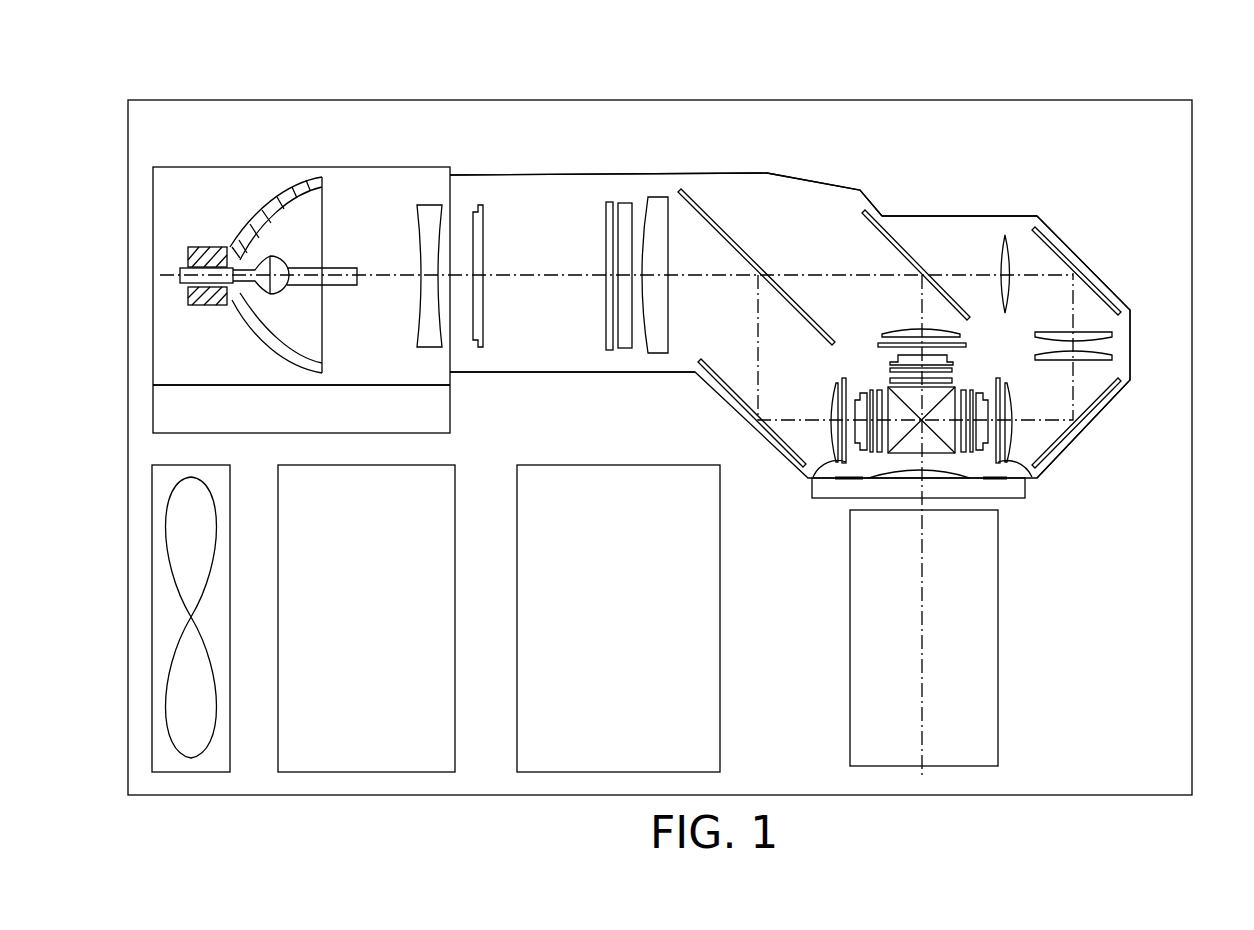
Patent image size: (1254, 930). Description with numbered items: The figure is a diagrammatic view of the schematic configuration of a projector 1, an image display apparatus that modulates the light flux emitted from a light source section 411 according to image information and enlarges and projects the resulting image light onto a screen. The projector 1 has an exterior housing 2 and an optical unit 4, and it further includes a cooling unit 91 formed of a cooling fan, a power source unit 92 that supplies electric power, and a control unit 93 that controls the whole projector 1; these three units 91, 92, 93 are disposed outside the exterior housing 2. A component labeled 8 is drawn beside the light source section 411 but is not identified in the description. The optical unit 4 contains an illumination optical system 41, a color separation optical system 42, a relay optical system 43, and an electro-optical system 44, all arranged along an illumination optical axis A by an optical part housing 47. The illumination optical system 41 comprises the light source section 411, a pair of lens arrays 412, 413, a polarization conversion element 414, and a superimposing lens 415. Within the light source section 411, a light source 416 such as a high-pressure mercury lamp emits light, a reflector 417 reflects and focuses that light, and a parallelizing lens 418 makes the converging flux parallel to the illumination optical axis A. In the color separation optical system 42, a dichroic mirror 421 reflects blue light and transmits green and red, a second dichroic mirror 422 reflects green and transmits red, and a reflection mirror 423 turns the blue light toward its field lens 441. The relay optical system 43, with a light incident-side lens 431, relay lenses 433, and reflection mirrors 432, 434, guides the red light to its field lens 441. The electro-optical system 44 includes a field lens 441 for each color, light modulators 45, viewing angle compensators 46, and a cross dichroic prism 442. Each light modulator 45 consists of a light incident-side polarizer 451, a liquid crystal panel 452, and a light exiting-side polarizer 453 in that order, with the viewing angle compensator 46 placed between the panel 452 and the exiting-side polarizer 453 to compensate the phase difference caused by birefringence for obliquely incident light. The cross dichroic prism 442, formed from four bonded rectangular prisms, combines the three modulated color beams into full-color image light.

The projector 1 is at (982, 66).
The exterior housing 2 is at (1192, 215).
The optical unit 4 is at (1107, 118).
The light source support 8 is at (447, 396).
The illumination optical system 41 is at (611, 158).
The light source section 411 is at (170, 117).
The lens array 412 is at (483, 226).
The lens array 413 is at (607, 202).
The polarization conversion element 414 is at (630, 203).
The superimposing lens 415 is at (660, 215).
The light source 416 is at (303, 265).
The reflector 417 is at (290, 198).
The parallelizing lens 418 is at (427, 204).
The color separation optical system 42 is at (820, 208).
The dichroic mirror 421 is at (705, 207).
The dichroic mirror 422 is at (895, 240).
The reflection mirror 423 is at (735, 398).
The relay optical system 43 is at (1090, 226).
The light incident-side lens 431 is at (1005, 234).
The reflection mirror 432 is at (1097, 287).
The relay lens 433 is at (1112, 355).
The reflection mirror 434 is at (1090, 416).
The electro-optical system 44 is at (1008, 352).
The field lens 441 is at (905, 327).
The cross dichroic prism 442 is at (926, 478).
The light modulator 45 is at (976, 335).
The light incident-side polarizer 451 is at (877, 344).
The liquid crystal panel 452 is at (890, 358).
The light exiting-side polarizer 453 is at (960, 362).
The viewing angle compensator 46 is at (888, 389).
The optical part housing 47 is at (945, 215).
The cooling unit 91 is at (220, 463).
The power source unit 92 is at (455, 465).
The control unit 93 is at (650, 465).
The illumination optical axis A is at (548, 280).